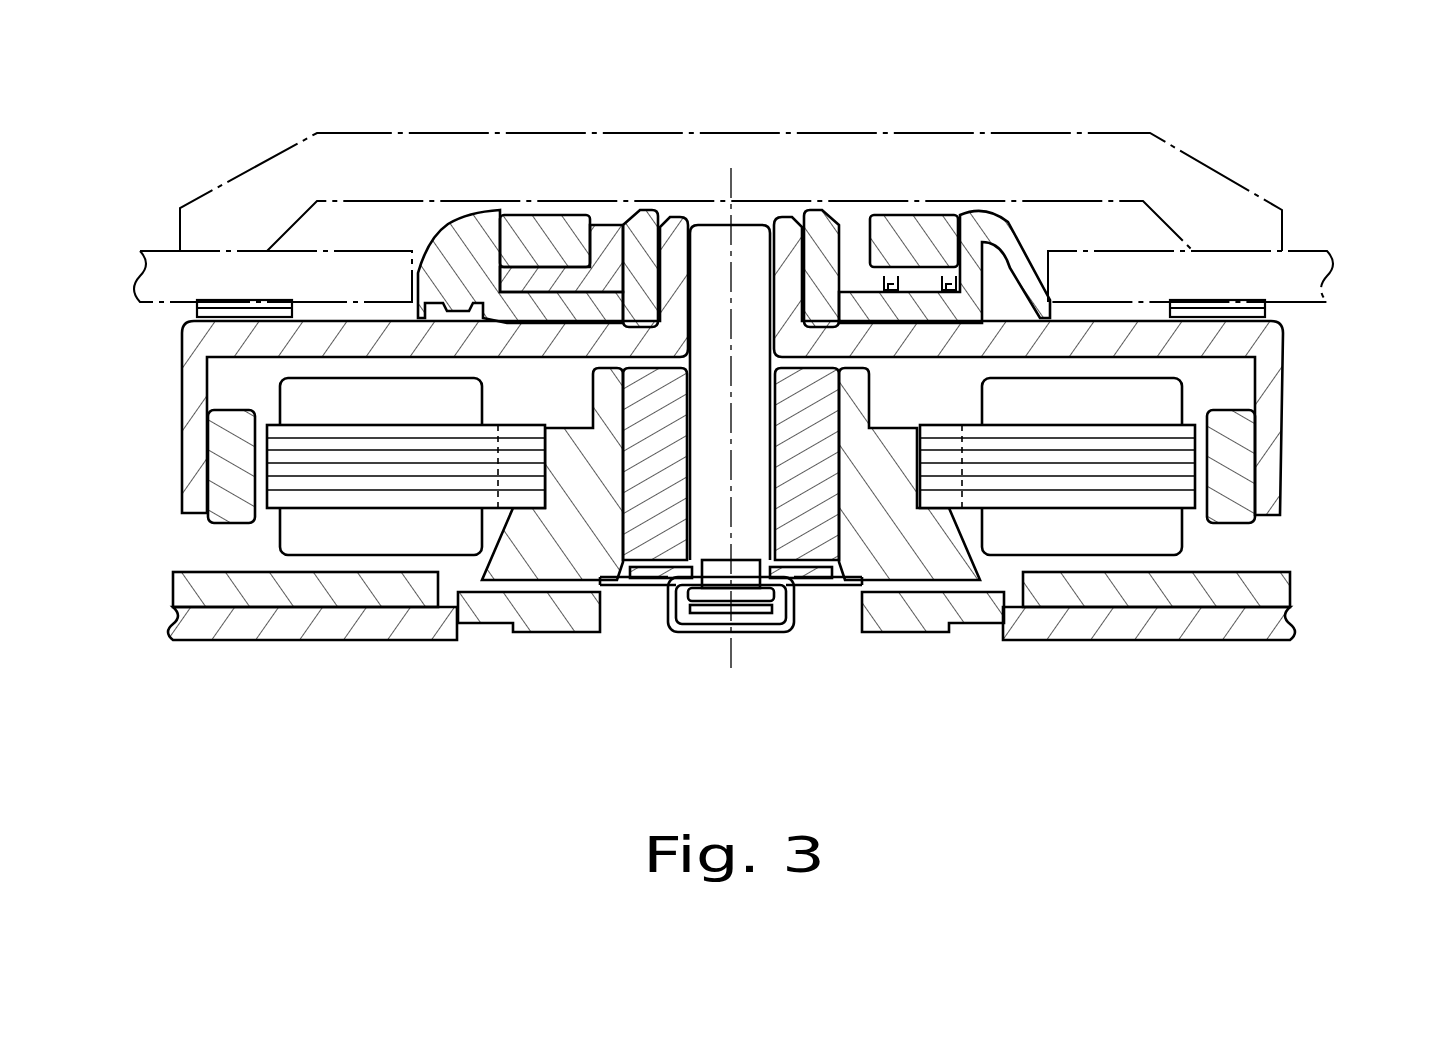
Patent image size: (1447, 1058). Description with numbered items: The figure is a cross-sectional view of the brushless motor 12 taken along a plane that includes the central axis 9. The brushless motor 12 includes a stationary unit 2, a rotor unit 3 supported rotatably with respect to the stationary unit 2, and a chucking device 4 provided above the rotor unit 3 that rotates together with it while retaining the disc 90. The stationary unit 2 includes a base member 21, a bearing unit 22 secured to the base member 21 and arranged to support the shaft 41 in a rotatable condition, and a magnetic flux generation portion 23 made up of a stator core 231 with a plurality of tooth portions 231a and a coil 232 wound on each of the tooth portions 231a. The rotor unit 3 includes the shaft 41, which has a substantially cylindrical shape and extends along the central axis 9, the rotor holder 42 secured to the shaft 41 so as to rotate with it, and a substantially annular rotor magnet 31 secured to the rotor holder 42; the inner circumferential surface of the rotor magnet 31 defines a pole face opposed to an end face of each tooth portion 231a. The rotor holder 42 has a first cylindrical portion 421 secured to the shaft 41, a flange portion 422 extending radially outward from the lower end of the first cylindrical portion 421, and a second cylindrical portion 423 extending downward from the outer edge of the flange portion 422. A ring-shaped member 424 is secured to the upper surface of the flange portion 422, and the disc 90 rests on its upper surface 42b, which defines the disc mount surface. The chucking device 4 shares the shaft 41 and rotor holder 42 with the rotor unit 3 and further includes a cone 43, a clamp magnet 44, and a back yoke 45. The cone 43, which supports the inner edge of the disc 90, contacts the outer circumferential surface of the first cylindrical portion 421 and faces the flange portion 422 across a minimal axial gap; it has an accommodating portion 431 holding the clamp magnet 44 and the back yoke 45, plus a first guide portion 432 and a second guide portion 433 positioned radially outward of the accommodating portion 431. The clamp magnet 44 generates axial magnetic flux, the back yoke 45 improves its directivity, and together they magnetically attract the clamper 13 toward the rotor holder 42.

The stationary unit 2 is at (1158, 648).
The rotor unit 3 is at (1352, 410).
The chucking device 4 is at (1005, 207).
The central axis 9 is at (731, 181).
The brushless motor 12 is at (209, 99).
The clamper 13 is at (1228, 160).
The base member 21 is at (1068, 622).
The bearing unit 22 is at (645, 542).
The magnetic flux generation portion 23 is at (430, 702).
The rotor magnet 31 is at (1235, 515).
The shaft 41 is at (745, 232).
The rotor holder 42 is at (1298, 360).
The cone 43 is at (850, 217).
The clamp magnet 44 is at (525, 226).
The back yoke 45 is at (590, 282).
The disc 90 is at (1308, 250).
The stator core 231 is at (338, 527).
The coil 232 is at (402, 535).
The tooth portion 231a is at (398, 443).
The first cylindrical portion 421 is at (672, 283).
The flange portion 422 is at (342, 338).
The second cylindrical portion 423 is at (185, 480).
The ring-shaped member 424 is at (1235, 305).
The upper surface of the ring-shaped member 42b is at (1207, 300).
The accommodating portion 431 is at (830, 207).
The first guide portion 432 is at (1008, 228).
The second guide portion 433 is at (465, 238).